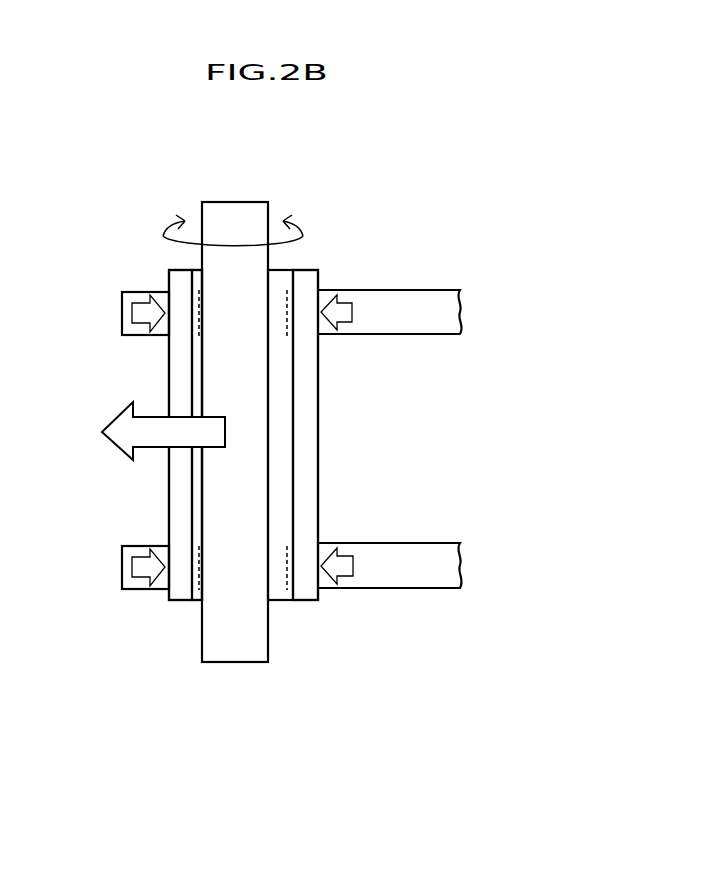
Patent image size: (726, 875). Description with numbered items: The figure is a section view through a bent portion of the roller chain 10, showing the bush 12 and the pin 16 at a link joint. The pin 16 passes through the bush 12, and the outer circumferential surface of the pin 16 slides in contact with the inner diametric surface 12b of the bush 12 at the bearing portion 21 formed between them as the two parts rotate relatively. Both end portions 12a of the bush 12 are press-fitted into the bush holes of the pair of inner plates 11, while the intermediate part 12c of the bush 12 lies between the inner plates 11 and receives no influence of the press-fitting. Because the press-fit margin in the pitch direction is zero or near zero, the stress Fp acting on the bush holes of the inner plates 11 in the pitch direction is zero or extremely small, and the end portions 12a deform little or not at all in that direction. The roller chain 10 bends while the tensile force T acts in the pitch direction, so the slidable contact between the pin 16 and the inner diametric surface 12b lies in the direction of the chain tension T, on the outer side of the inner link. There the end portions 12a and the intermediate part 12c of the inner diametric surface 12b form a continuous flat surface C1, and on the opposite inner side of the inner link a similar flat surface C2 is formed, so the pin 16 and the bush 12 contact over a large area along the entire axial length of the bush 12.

The roller chain 10 is at (382, 185).
The inner plate 11 is at (430, 300).
The bush 12 is at (320, 449).
The end portions of the bush 12a is at (181, 295).
The inner diametric surface 12b is at (193, 402).
The intermediate part 12c is at (310, 421).
The pin 16 is at (239, 657).
The bearing portion 21 is at (287, 268).
The stress in the pitch direction Fp is at (122, 312).
The tensile force T is at (156, 420).
The continuous flat surface C1 is at (208, 336).
The flat surface C2 is at (280, 336).